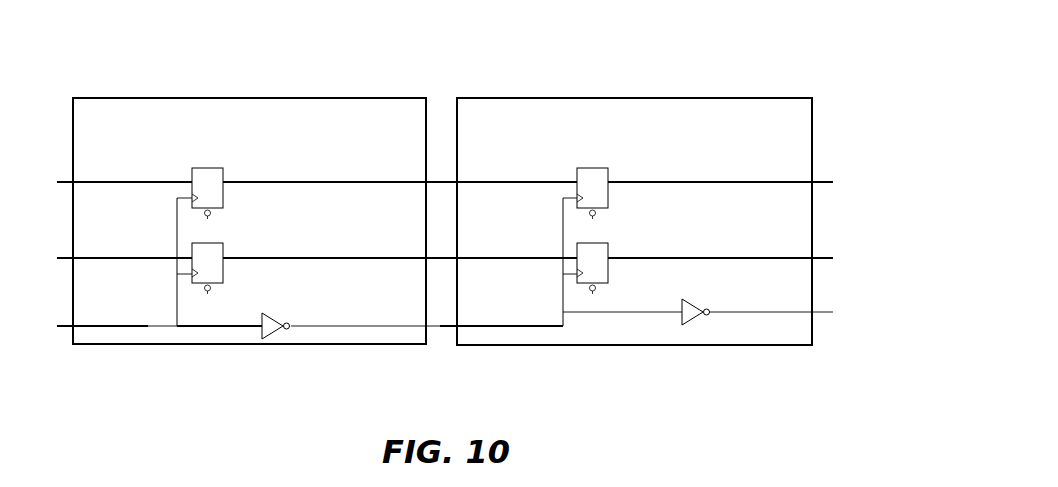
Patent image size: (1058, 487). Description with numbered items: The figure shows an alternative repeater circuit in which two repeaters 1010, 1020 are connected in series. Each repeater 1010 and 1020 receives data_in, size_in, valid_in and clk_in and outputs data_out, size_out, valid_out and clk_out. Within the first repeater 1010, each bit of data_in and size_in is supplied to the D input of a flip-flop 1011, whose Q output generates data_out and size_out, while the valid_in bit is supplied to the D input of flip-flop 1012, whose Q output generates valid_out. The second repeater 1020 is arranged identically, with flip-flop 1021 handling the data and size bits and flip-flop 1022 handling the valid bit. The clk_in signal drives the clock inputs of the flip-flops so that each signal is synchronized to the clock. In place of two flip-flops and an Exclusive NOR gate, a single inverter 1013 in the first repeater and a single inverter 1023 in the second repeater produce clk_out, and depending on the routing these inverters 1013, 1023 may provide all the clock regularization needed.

The repeater 1010 is at (267, 98).
The flip-flop 1011 is at (202, 167).
The flip-flop 1012 is at (222, 246).
The inverter 1013 is at (272, 330).
The repeater 1020 is at (640, 98).
The flip-flop 1021 is at (597, 168).
The flip-flop 1022 is at (608, 246).
The inverter 1023 is at (686, 317).